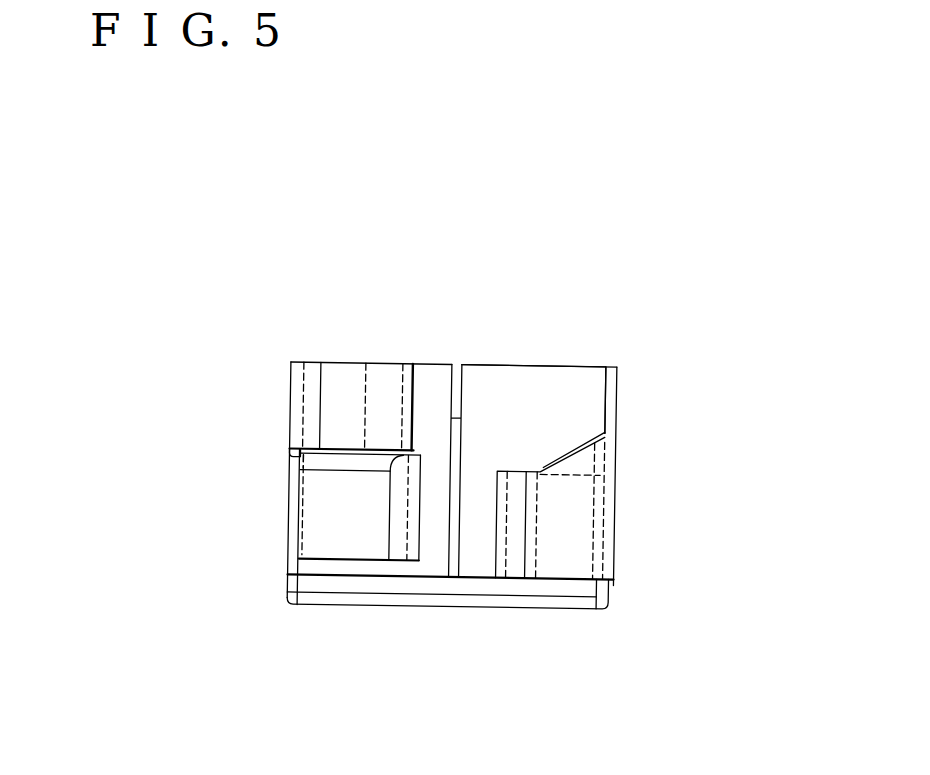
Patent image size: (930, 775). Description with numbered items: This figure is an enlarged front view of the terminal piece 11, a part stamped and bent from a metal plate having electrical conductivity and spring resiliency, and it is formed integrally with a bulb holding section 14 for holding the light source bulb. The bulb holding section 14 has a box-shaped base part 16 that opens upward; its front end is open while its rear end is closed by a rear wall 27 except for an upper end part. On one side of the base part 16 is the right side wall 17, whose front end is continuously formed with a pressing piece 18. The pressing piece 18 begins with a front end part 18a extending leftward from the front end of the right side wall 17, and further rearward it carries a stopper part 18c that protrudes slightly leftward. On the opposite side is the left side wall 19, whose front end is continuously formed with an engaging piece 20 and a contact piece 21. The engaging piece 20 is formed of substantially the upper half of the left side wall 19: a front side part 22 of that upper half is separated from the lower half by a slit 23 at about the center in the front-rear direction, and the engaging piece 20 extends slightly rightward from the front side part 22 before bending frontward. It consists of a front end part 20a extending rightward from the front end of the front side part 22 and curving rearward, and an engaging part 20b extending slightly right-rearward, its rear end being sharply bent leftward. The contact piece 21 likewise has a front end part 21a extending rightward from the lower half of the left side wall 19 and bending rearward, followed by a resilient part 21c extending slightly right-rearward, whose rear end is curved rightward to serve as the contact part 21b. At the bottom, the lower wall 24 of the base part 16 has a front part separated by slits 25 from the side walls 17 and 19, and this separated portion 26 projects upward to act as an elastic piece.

The terminal piece 11 is at (527, 365).
The bulb holding section 14 is at (617, 383).
The base part 16 is at (478, 388).
The right side wall 17 is at (617, 408).
The pressing piece 18 is at (582, 447).
The front end part 18a is at (568, 533).
The stopper part 18c is at (518, 498).
The left side wall 19 is at (293, 513).
The engaging piece 20 is at (348, 382).
The front end part 20a is at (320, 383).
The engaging part 20b is at (417, 382).
The contact piece 21 is at (322, 502).
The front end part 21a is at (322, 538).
The contact part 21b is at (415, 508).
The resilient part 21c is at (370, 545).
The front side part 22 is at (312, 393).
The slit 23 is at (293, 457).
The lower wall 24 is at (567, 610).
The slits 25 is at (291, 576).
The separated portion 26 is at (523, 587).
The rear wall 27 is at (500, 388).